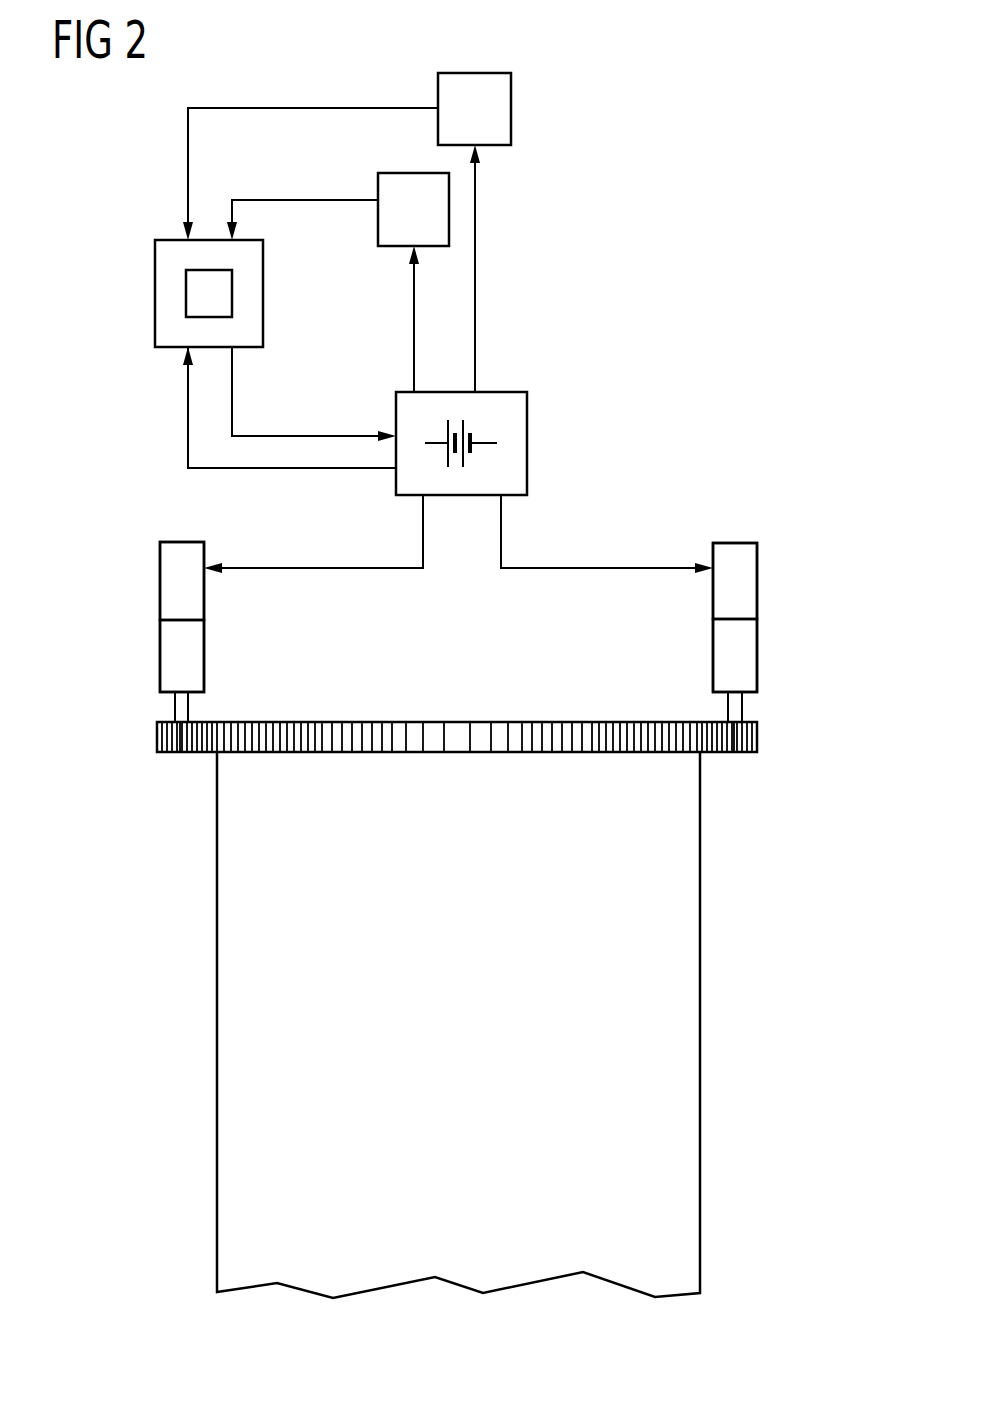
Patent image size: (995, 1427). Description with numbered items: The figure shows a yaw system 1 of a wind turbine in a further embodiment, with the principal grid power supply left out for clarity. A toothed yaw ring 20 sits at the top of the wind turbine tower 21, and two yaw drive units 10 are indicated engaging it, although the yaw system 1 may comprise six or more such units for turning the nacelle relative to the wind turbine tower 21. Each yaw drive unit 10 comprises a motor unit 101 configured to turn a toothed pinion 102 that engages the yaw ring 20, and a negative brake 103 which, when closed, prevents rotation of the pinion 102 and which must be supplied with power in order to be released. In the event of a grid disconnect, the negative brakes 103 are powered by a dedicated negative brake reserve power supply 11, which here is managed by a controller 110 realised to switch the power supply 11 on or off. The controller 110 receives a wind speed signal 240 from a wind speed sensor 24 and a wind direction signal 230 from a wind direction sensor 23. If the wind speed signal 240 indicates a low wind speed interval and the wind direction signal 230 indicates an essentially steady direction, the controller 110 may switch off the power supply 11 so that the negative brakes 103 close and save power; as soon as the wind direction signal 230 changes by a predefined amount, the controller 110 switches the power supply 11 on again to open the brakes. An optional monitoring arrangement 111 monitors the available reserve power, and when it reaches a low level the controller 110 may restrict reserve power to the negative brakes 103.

The yaw system 1 is at (660, 445).
The yaw drive unit 10 is at (166, 514).
The motor unit 101 is at (160, 651).
The toothed pinion 102 is at (157, 734).
The negative brake 103 is at (160, 577).
The dedicated negative brake reserve power supply 11 is at (527, 442).
The controller 110 is at (155, 300).
The monitoring arrangement 111 is at (232, 290).
The yaw ring 20 is at (443, 740).
The wind turbine tower 21 is at (688, 875).
The wind direction sensor 23 is at (378, 228).
The wind direction signal 230 is at (287, 200).
The wind speed sensor 24 is at (511, 118).
The wind speed signal 240 is at (313, 108).